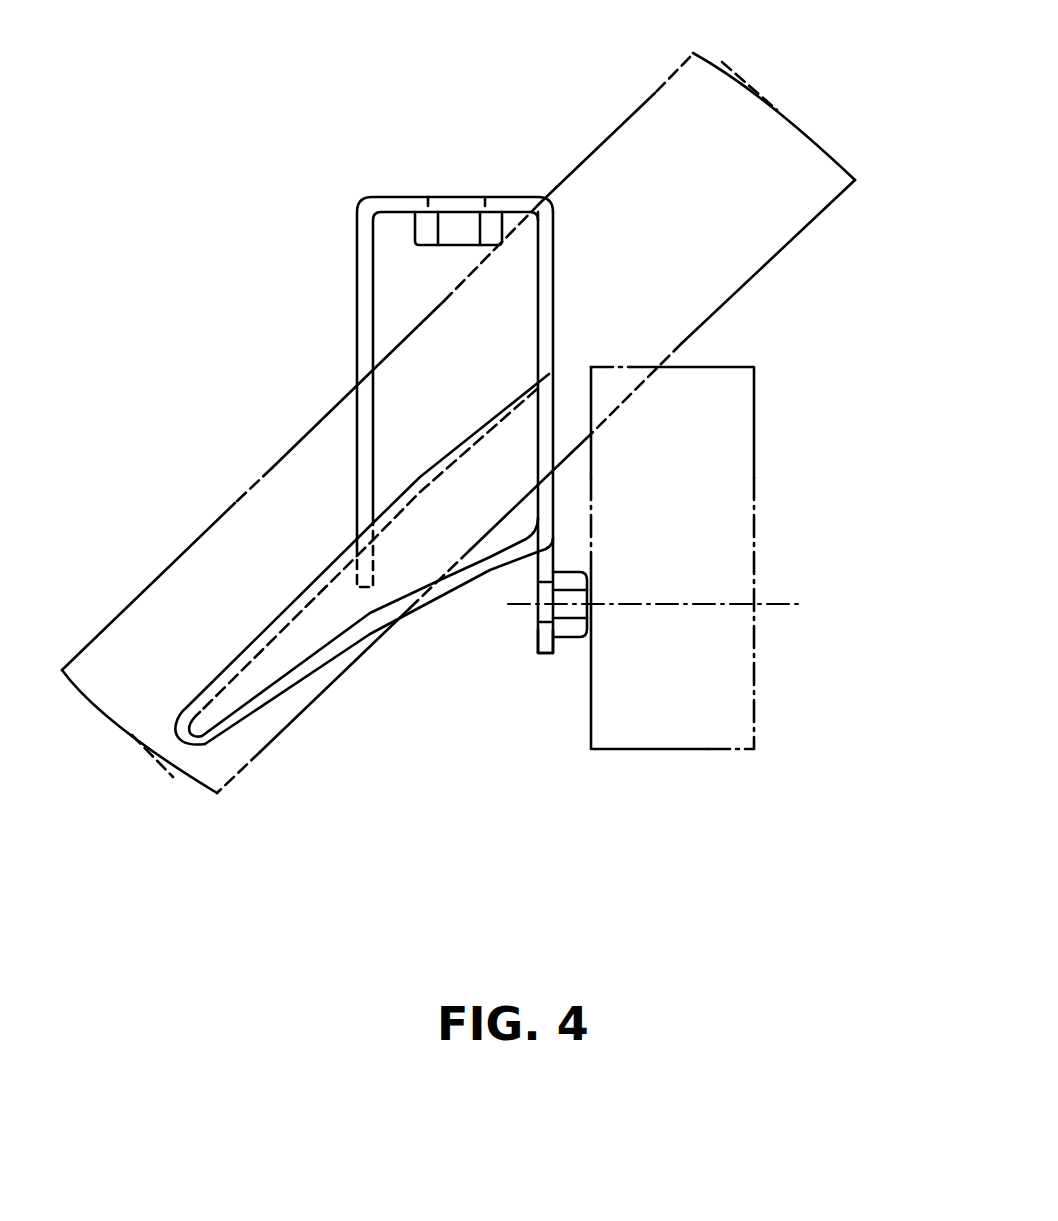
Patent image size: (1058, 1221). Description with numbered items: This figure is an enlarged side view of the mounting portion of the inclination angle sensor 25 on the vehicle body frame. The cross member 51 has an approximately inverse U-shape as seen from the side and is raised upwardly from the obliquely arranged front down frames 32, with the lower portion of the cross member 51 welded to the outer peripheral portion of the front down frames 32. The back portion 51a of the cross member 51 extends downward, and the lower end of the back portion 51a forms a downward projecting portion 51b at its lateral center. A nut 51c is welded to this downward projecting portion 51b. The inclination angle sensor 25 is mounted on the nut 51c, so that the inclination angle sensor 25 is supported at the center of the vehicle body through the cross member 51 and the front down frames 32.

The inclination angle sensor 25 is at (664, 694).
The front down frame 32 is at (230, 502).
The cross member 51 is at (360, 155).
The back portion 51a is at (555, 278).
The downward projecting portion 51b is at (538, 645).
The nut 51c is at (572, 640).